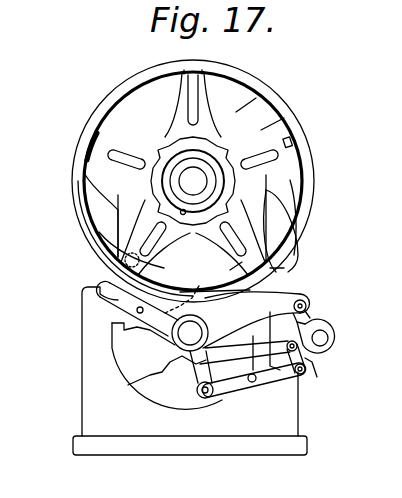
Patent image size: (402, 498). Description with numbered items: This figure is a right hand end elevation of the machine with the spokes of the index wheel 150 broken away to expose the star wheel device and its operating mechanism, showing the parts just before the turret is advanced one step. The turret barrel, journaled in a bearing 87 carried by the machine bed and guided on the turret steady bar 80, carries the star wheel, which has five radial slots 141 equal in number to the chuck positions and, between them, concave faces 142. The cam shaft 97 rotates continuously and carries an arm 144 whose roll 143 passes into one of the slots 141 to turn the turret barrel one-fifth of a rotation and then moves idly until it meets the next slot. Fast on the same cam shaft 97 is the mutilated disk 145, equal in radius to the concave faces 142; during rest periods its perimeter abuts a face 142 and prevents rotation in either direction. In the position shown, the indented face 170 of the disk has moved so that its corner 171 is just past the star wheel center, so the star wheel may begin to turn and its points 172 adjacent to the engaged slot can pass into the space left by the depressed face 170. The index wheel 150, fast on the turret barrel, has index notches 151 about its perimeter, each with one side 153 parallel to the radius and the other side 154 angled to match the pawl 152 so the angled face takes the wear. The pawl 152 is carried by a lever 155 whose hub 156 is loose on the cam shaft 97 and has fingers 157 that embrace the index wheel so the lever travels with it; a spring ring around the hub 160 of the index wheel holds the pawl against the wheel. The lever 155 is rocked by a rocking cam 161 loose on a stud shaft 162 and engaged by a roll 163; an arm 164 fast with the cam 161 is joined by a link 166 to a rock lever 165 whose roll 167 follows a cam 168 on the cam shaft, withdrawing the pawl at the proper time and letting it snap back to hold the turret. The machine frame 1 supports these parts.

The machine frame 1 is at (110, 374).
The turret steady bar 80 is at (193, 181).
The bearing 87 is at (264, 237).
The cam shaft 97 is at (185, 400).
The radial slots 141 is at (108, 164).
The concave faces 142 is at (234, 113).
The roll 143 is at (193, 237).
The arm 144 is at (162, 283).
The mutilated disk 145 is at (151, 372).
The index wheel 150 is at (298, 203).
The index notches 151 is at (82, 134).
The pawl 152 is at (82, 314).
The side of notch 153 is at (190, 59).
The side of notch 154 is at (296, 137).
The lever 155 is at (202, 316).
The hub 156 is at (162, 370).
The fingers 157 is at (268, 268).
The hub of index wheel 160 is at (120, 158).
The rocking cam 161 is at (314, 323).
The stud shaft 162 is at (322, 338).
The roll 163 is at (306, 304).
The arm 164 is at (308, 363).
The rock lever 165 is at (240, 402).
The link 166 is at (320, 370).
The roll 167 is at (214, 405).
The cam 168 is at (248, 357).
The indented face 170 is at (262, 130).
The corner 171 is at (230, 276).
The points 172 is at (180, 96).